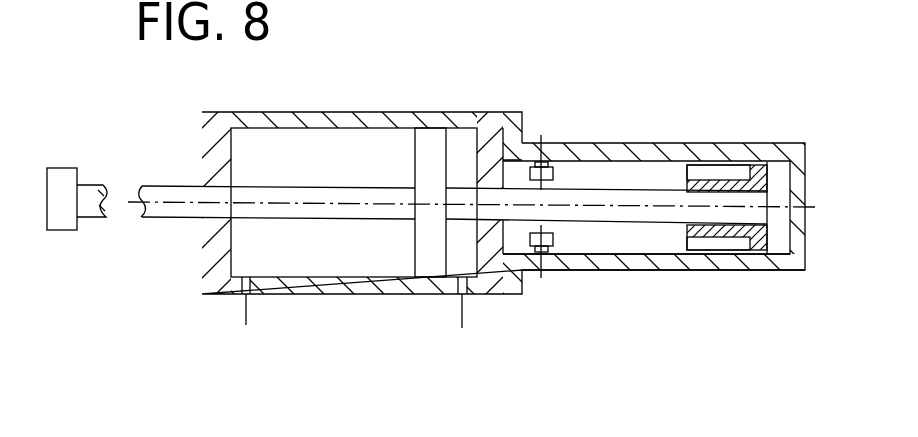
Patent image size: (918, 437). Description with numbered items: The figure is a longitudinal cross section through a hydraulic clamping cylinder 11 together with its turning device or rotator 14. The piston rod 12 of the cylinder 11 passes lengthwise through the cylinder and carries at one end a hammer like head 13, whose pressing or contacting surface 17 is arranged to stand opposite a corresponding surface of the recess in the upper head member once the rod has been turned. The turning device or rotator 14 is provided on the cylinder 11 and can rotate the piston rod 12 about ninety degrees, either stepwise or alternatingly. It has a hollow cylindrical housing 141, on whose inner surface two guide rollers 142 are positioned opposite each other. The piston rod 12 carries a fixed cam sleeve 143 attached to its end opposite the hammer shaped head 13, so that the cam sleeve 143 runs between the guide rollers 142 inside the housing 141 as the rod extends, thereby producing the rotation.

The hydraulic clamping cylinder 11 is at (338, 118).
The piston rod 12 is at (163, 212).
The hammer like head 13 is at (63, 182).
The pressing or contacting surface 17 is at (78, 175).
The turning device or rotator 14 is at (623, 153).
The hollow cylindrical housing 141 is at (675, 262).
The guide rollers 142 is at (551, 243).
The cam sleeve 143 is at (762, 243).